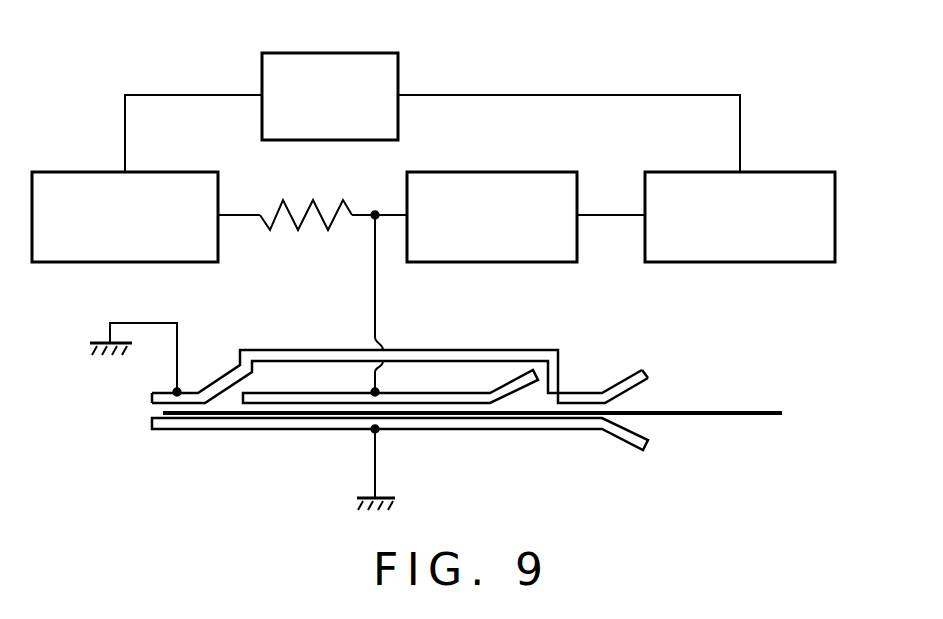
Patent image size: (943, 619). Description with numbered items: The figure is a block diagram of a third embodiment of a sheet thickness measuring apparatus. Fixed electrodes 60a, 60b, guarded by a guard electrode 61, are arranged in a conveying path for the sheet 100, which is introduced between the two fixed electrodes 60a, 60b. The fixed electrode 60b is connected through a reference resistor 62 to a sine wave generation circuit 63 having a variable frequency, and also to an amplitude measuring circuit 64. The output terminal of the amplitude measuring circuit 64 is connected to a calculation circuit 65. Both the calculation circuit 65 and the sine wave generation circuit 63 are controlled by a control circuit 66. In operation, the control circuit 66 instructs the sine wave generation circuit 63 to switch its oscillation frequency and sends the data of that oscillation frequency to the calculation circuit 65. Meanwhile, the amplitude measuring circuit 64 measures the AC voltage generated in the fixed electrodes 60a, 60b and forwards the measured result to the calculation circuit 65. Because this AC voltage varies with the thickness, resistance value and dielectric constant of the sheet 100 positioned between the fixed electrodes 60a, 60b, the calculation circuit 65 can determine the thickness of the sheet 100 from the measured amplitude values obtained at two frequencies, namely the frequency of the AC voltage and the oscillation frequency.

The control circuit 66 is at (355, 53).
The sine wave generation circuit 63 is at (168, 172).
The reference resistor 62 is at (318, 203).
The amplitude measuring circuit 64 is at (518, 172).
The calculation circuit 65 is at (770, 172).
The guard electrode 61 is at (470, 350).
The fixed electrode 60b is at (353, 392).
The fixed electrode 60a is at (343, 431).
The sheet 100 is at (713, 411).